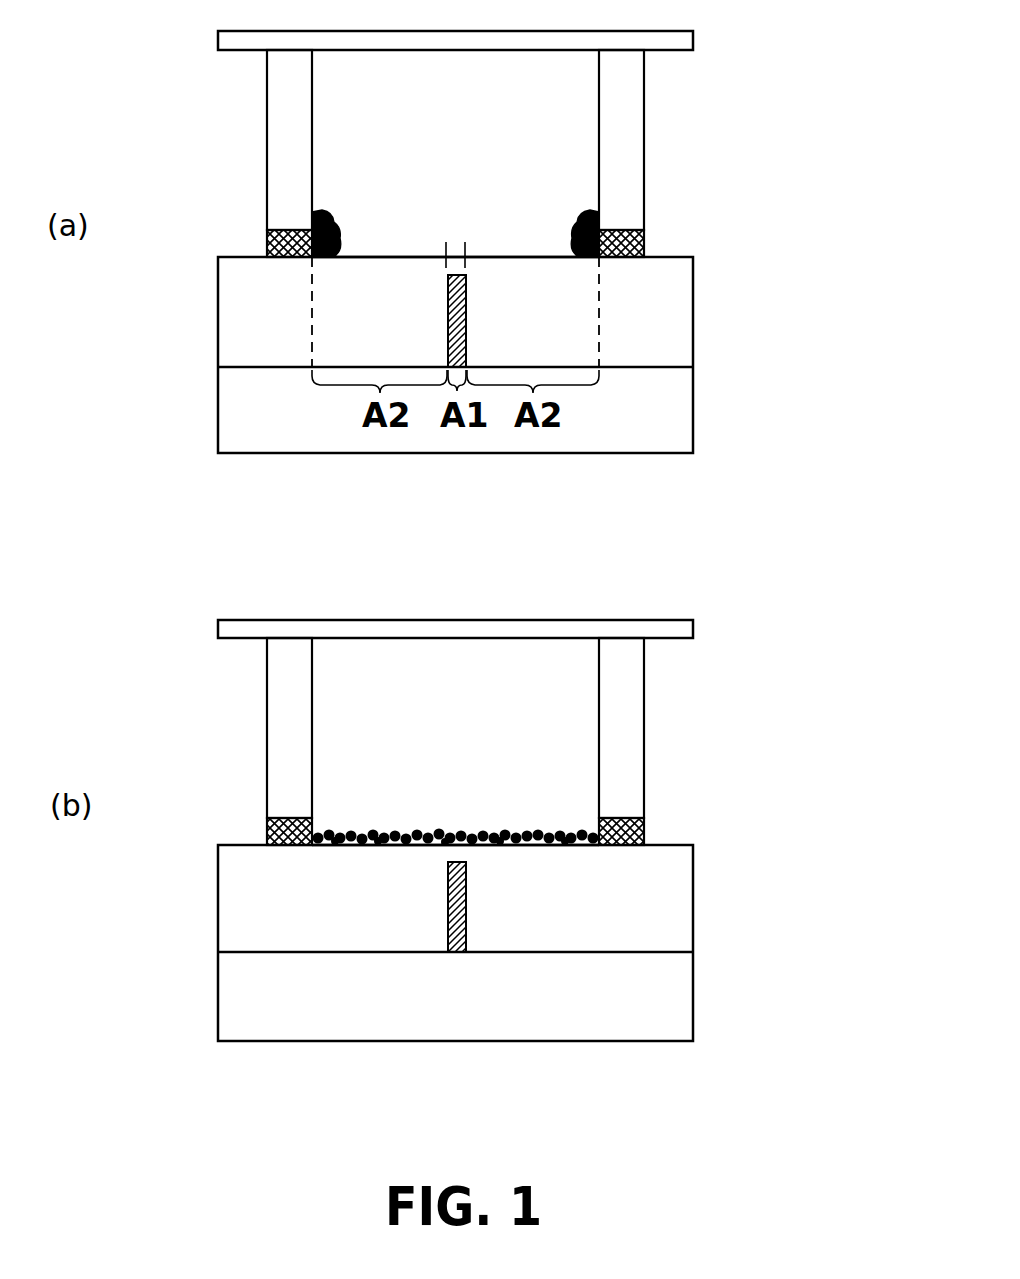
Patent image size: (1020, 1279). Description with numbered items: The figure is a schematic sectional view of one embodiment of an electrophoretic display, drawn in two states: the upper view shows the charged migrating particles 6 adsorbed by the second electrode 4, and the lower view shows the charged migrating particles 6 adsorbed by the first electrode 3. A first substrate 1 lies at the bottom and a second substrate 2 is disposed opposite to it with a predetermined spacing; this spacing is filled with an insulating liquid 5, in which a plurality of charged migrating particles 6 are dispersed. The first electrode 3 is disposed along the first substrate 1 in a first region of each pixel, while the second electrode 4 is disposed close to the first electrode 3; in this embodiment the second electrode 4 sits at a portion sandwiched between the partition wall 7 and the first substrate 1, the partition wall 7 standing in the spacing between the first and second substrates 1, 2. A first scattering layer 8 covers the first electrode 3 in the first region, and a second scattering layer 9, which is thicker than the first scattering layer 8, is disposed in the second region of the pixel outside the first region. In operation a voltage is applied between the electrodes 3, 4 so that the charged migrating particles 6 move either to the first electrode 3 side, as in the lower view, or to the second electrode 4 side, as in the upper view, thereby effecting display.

The first substrate 1 is at (686, 413).
The second substrate 2 is at (688, 43).
The first electrode 3 is at (449, 290).
The second electrode 4 is at (268, 243).
The insulating liquid 5 is at (466, 158).
The charged migrating particles 6 is at (322, 212).
The partition wall 7 is at (274, 137).
The first scattering layer 8 is at (452, 262).
The second scattering layer 9 is at (383, 268).